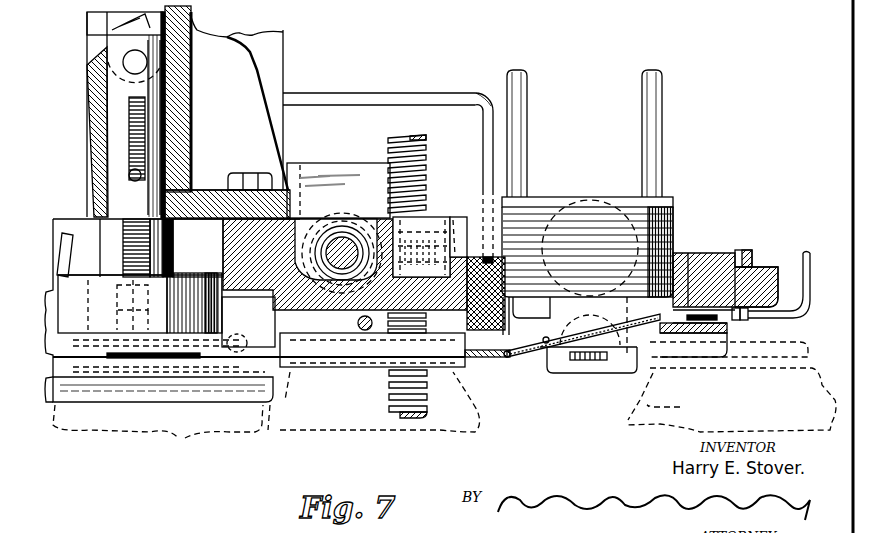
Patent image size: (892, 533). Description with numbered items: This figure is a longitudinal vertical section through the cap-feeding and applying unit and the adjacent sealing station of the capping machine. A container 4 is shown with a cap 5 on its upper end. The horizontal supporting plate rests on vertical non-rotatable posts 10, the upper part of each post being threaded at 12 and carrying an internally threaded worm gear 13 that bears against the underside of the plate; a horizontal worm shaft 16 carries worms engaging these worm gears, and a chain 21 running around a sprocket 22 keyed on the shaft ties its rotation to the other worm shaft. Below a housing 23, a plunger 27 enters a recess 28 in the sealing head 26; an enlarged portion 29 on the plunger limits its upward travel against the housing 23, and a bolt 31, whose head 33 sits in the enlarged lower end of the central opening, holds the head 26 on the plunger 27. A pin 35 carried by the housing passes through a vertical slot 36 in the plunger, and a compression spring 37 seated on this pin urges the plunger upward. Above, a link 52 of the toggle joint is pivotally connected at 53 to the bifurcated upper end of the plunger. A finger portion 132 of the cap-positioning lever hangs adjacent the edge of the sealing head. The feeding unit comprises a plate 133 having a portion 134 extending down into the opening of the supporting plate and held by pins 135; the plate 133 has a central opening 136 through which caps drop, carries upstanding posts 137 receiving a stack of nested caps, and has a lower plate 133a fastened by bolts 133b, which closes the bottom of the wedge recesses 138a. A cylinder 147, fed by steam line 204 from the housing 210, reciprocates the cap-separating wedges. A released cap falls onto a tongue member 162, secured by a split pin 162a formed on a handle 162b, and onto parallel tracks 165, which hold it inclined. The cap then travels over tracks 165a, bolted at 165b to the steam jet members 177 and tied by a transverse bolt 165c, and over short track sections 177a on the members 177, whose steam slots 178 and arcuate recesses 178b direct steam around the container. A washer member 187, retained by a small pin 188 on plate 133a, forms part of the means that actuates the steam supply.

The container 4 is at (444, 399).
The cap 5 is at (228, 336).
The posts 10 is at (388, 400).
The threaded portion 12 is at (405, 170).
The worm gear 13 is at (436, 240).
The worm shaft 16 is at (350, 246).
The chain 21 is at (274, 182).
The sprocket 22 is at (335, 214).
The housing 23 is at (185, 83).
The sealing head 26 is at (222, 305).
The plunger 27 is at (155, 193).
The recess 28 is at (178, 278).
The enlarged portion 29 is at (173, 230).
The bolt 31 is at (122, 240).
The head 33 is at (125, 318).
The pin 35 is at (141, 175).
The slot 36 is at (143, 143).
The compression spring 37 is at (150, 115).
The link 52 is at (105, 34).
The pivotal connection 53 is at (137, 62).
The finger portion 132 is at (65, 233).
The plate 133 is at (716, 253).
The plate 133a is at (420, 318).
The bolts 133b is at (486, 252).
The portion 134 is at (754, 270).
The pins 135 is at (740, 250).
The opening 136 is at (660, 303).
The posts 137 is at (650, 114).
The recesses 138a is at (533, 307).
The cylinder 147 is at (588, 212).
The tongue member 162 is at (672, 335).
The pin 162a is at (718, 318).
The handle 162b is at (807, 266).
The tracks 165 is at (492, 356).
The tracks 165a is at (325, 365).
The bolts 165b is at (290, 385).
The bolt 165c is at (357, 323).
The steam jet members 177 is at (67, 358).
The track sections 177a is at (247, 345).
The steam slots 178 is at (130, 355).
The arcuate recess 178b is at (203, 345).
The washer member 187 is at (573, 360).
The pin 188 is at (600, 366).
The line 204 is at (368, 93).
The housing 210 is at (284, 63).